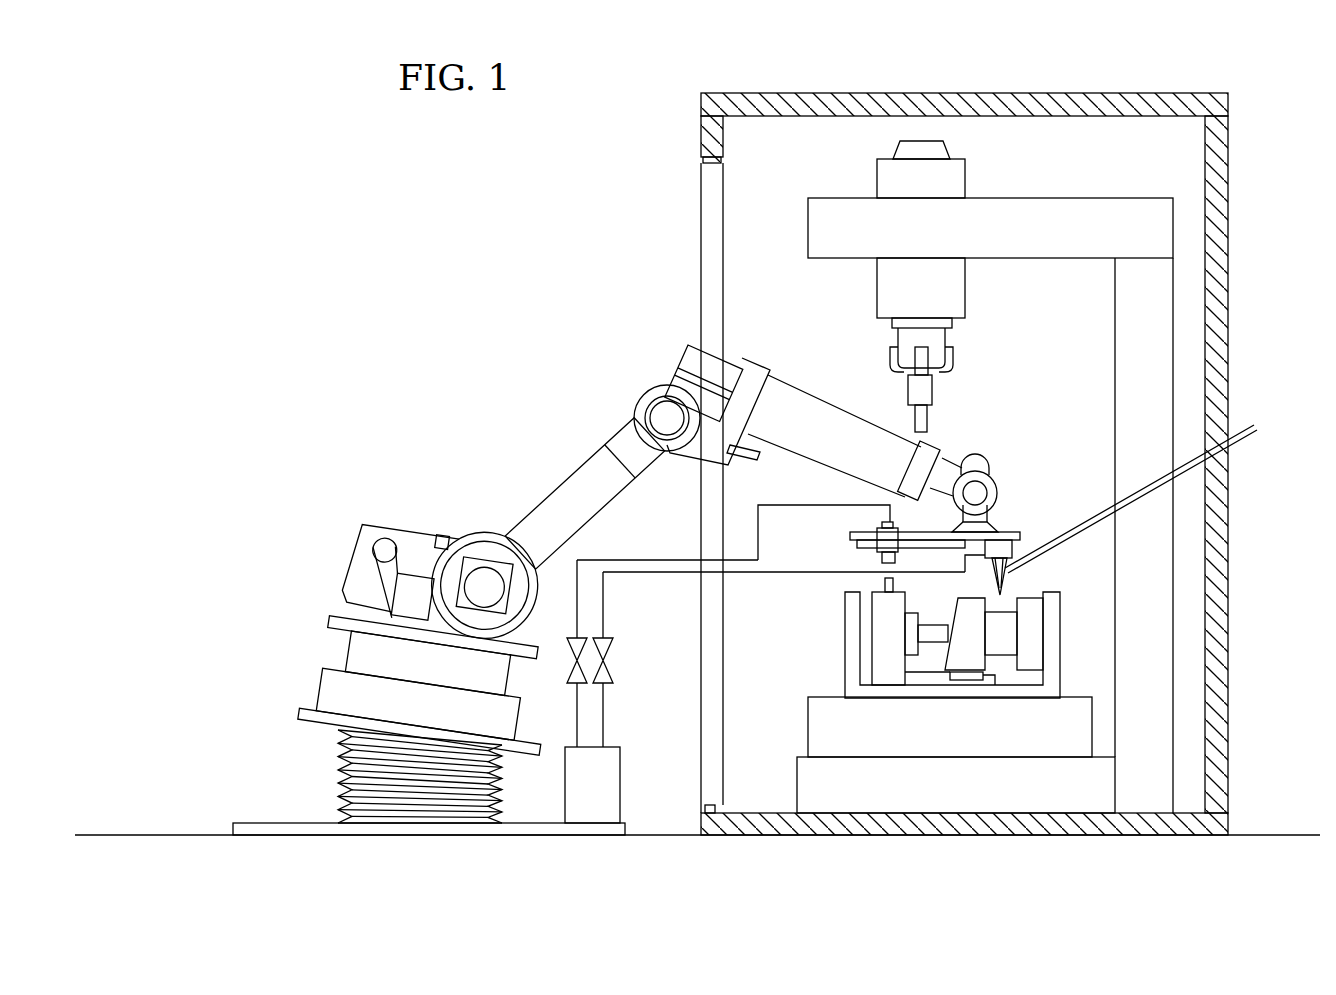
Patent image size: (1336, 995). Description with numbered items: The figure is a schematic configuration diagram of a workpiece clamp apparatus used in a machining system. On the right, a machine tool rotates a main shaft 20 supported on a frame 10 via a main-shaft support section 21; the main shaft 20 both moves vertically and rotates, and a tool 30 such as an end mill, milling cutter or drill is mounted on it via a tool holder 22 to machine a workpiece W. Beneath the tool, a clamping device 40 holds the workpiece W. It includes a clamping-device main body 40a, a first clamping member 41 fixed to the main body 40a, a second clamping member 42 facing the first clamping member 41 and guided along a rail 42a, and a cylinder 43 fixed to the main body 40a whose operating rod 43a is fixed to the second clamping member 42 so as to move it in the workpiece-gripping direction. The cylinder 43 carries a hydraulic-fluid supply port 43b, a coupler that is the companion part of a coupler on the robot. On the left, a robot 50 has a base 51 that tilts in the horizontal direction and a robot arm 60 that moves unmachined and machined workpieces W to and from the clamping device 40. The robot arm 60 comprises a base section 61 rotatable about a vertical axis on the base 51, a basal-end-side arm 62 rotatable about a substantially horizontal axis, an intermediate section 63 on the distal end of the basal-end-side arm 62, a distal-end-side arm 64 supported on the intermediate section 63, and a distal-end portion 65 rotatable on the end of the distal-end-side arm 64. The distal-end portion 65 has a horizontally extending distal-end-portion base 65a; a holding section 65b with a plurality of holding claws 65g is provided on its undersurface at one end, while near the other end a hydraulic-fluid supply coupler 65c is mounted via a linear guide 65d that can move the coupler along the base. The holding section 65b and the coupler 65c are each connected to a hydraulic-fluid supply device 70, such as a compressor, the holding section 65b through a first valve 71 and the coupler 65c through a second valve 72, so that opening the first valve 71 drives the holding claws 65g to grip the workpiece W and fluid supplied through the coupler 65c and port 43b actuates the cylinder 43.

The frame 10 is at (1229, 222).
The main shaft 20 is at (983, 477).
The main-shaft support section 21 is at (877, 280).
The tool holder 22 is at (946, 337).
The tool 30 is at (933, 387).
The clamping device 40 is at (1018, 694).
The clamping-device main body 40a is at (845, 666).
The first clamping member 41 is at (1035, 633).
The second clamping member 42 is at (966, 679).
The rail 42a is at (918, 682).
The cylinder 43 is at (872, 636).
The operating rod 43a is at (933, 638).
The hydraulic-fluid supply port 43b is at (882, 580).
The robot 50 is at (429, 664).
The base 51 is at (350, 652).
The robot arm 60 is at (824, 489).
The base section 61 is at (405, 530).
The basal-end-side arm 62 is at (578, 470).
The intermediate section 63 is at (731, 461).
The distal-end-side arm 64 is at (833, 406).
The distal-end portion 65 is at (1034, 496).
The distal-end-portion base 65a is at (1027, 537).
The holding section 65b is at (1012, 562).
The hydraulic-fluid supply coupler 65c is at (860, 550).
The linear guide 65d is at (855, 546).
The holding claws 65g is at (1157, 485).
The hydraulic-fluid supply device 70 is at (622, 771).
The first valve 71 is at (617, 667).
The second valve 72 is at (580, 638).
The workpiece W is at (1005, 660).